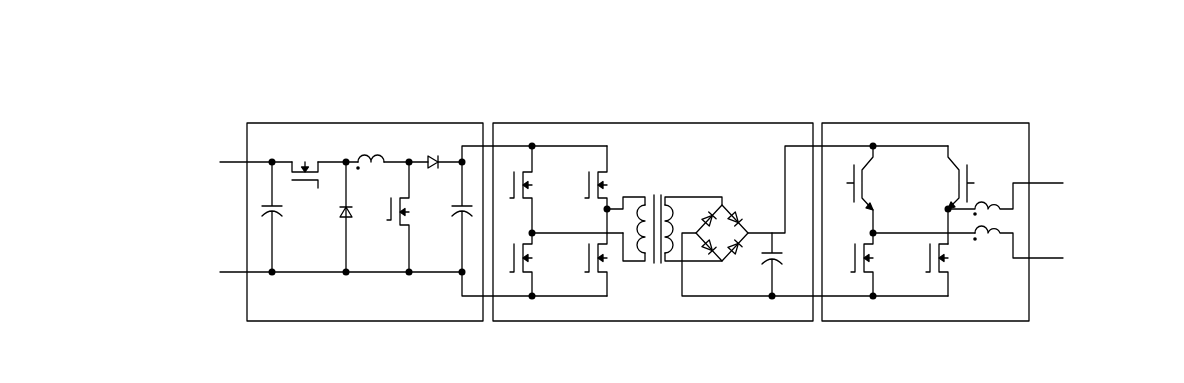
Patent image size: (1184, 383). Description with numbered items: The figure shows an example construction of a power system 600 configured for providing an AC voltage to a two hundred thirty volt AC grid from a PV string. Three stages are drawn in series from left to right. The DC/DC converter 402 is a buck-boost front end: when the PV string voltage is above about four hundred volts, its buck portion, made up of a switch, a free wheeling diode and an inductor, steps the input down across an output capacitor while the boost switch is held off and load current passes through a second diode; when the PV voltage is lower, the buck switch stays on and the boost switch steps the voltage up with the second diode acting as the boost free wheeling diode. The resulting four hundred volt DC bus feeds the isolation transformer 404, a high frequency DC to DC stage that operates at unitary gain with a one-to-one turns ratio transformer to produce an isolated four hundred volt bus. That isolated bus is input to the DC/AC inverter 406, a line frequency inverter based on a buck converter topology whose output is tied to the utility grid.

The power system 600 is at (462, 58).
The DC/DC converter 402 is at (370, 322).
The isolation transformer 404 is at (705, 322).
The DC/AC inverter 406 is at (910, 322).